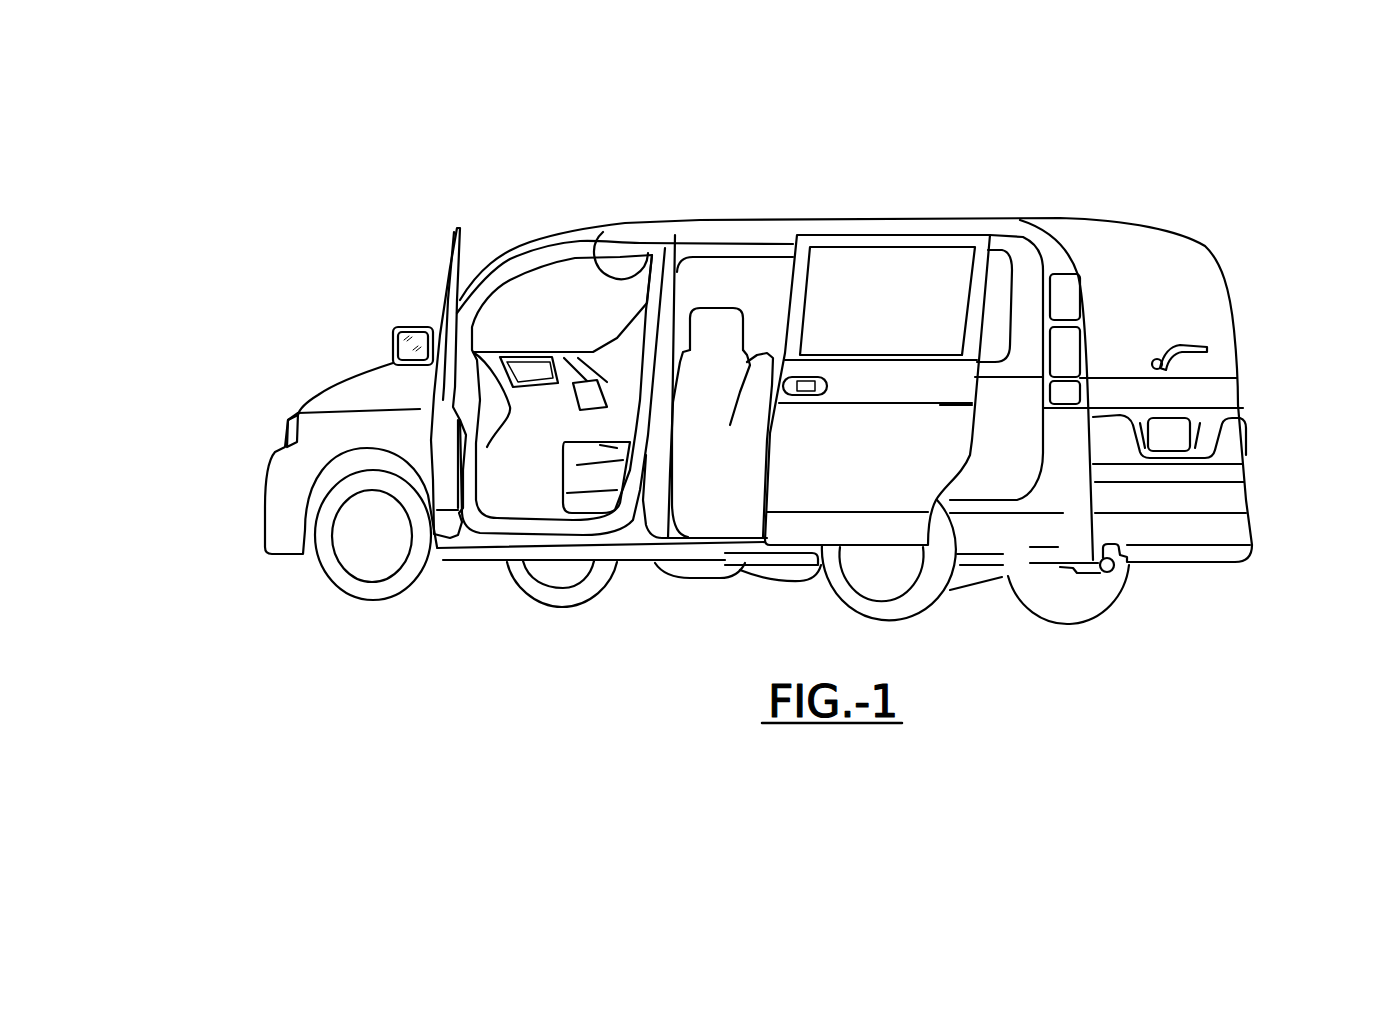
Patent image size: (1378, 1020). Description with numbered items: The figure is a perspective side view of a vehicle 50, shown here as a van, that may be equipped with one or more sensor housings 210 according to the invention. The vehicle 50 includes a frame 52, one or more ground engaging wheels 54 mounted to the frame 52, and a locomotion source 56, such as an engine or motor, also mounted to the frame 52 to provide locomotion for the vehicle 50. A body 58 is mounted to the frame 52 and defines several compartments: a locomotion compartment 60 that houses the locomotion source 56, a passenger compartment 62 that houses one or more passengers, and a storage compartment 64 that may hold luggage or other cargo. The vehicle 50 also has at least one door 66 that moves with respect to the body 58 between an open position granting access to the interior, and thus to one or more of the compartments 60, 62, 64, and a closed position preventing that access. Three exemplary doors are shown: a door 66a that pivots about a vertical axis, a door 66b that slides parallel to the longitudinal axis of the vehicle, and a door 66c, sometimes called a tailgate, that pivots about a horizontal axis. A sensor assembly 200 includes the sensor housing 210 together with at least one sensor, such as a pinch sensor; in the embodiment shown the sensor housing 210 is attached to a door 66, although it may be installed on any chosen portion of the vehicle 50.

The vehicle 50 is at (818, 122).
The frame 52 is at (670, 557).
The ground engaging wheels 54 is at (383, 600).
The locomotion source 56 is at (283, 350).
The body 58 is at (1028, 234).
The locomotion compartment 60 is at (298, 410).
The passenger compartment 62 is at (603, 232).
The storage compartment 64 is at (1225, 245).
The door 66 is at (457, 230).
The door 66a is at (447, 257).
The door 66b is at (813, 540).
The door 66c is at (1233, 500).
The sensor assembly 200 is at (893, 211).
The sensor housing 210 is at (829, 206).